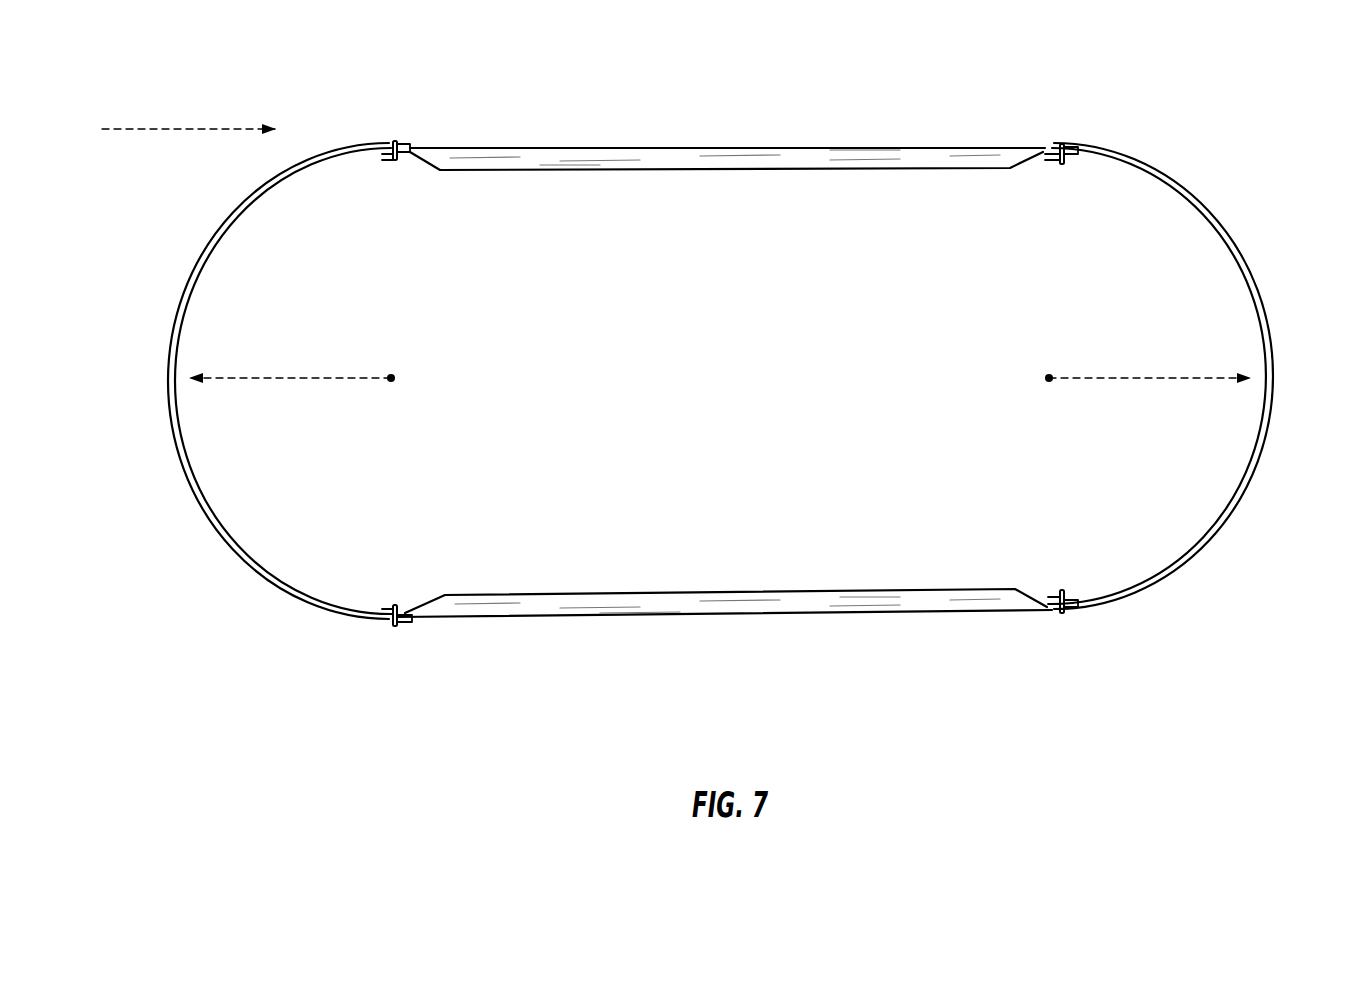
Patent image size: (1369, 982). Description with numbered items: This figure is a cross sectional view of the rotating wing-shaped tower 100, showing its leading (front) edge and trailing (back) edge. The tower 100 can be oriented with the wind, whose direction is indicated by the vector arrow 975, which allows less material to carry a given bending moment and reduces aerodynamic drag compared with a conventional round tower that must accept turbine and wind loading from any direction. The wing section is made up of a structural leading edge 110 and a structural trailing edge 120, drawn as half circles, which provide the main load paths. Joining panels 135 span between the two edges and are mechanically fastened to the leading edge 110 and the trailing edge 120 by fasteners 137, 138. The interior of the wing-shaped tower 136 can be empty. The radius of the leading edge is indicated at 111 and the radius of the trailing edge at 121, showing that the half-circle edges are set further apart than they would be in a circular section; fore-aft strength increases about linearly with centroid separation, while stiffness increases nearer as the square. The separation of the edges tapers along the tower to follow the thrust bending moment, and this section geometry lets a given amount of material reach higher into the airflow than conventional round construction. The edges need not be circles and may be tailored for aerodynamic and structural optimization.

The rotating wing-shaped tower 100 is at (918, 650).
The leading edge 110 is at (190, 288).
The radius of first curved section 111 is at (240, 378).
The trailing edge 120 is at (1253, 288).
The radius of second curved section 121 is at (1200, 378).
The joining panels 135 is at (500, 148).
The interior of the wing-shaped tower 136 is at (1060, 530).
The mechanical fastening 137 is at (395, 140).
The mechanical fastening 138 is at (1063, 145).
The wind vector arrow 975 is at (187, 129).